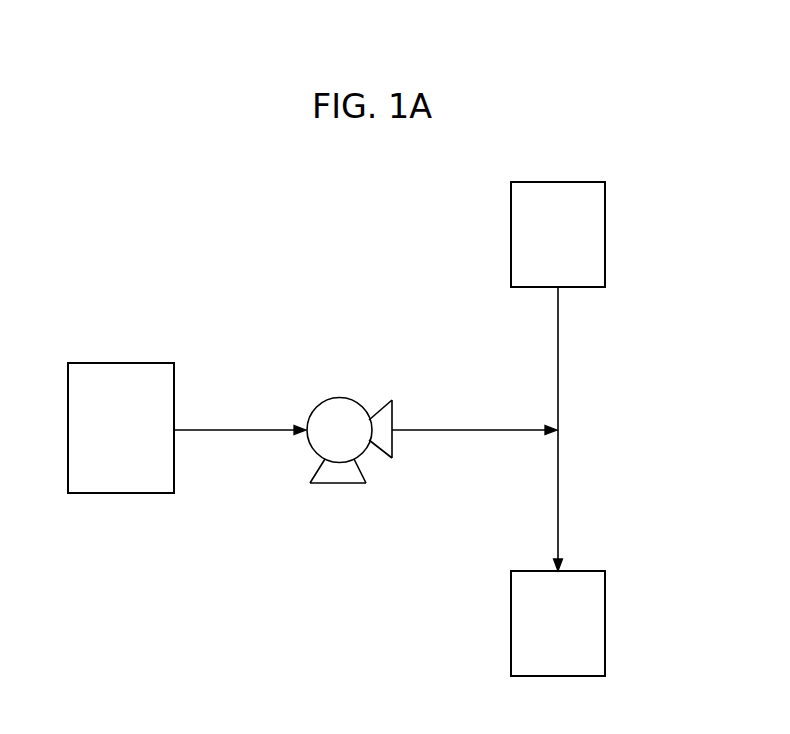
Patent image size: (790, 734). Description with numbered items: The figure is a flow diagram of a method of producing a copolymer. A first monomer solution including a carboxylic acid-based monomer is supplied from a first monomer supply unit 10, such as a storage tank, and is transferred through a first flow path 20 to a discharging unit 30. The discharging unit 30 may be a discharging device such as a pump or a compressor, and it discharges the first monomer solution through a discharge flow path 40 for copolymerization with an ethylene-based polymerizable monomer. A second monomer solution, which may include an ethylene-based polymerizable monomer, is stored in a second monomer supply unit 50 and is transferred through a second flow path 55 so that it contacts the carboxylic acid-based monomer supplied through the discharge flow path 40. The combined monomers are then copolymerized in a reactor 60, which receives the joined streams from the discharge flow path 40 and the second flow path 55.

The first monomer supply unit 10 is at (118, 363).
The first flow path 20 is at (238, 428).
The discharging unit 30 is at (338, 397).
The discharge flow path 40 is at (473, 428).
The second monomer supply unit 50 is at (605, 232).
The second flow path 55 is at (559, 371).
The reactor 60 is at (605, 620).